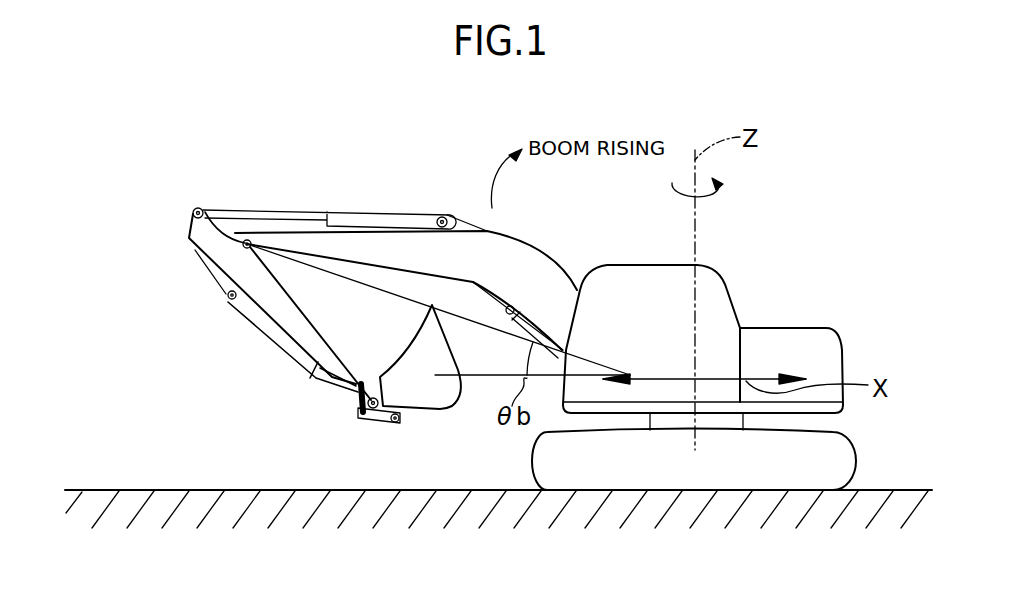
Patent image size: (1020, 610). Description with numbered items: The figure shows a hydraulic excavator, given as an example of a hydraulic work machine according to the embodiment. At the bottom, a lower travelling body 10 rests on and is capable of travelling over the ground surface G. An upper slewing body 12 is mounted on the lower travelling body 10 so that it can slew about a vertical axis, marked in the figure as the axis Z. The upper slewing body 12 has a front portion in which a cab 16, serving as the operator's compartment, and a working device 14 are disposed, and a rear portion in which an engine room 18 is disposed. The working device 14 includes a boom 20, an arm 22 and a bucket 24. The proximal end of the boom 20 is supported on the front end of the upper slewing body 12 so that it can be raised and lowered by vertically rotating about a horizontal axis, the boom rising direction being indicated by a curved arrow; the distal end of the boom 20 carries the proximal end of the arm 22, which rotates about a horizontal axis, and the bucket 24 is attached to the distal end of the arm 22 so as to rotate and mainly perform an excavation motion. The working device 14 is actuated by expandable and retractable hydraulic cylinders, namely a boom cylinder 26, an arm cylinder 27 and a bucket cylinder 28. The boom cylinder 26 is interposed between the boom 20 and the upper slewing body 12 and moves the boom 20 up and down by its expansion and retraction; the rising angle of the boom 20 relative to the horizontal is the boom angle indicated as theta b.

The lower travelling body 10 is at (717, 491).
The upper slewing body 12 is at (703, 308).
The working device 14 is at (382, 204).
The cab 16 is at (711, 283).
The engine room 18 is at (801, 342).
The boom 20 is at (547, 258).
The arm 22 is at (298, 308).
The bucket 24 is at (453, 403).
The boom cylinder 26 is at (538, 342).
The arm cylinder 27 is at (340, 213).
The bucket cylinder 28 is at (262, 332).
The ground surface G is at (144, 489).